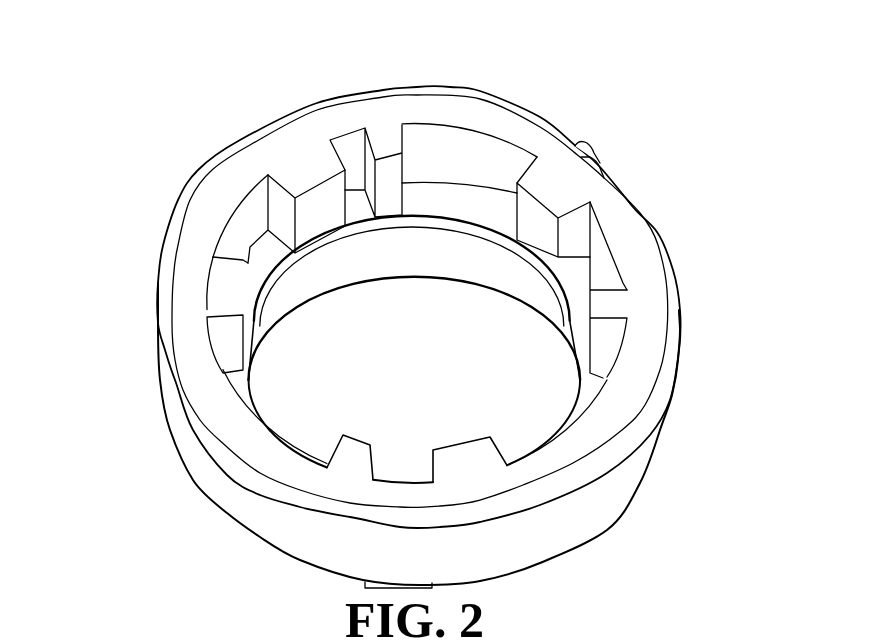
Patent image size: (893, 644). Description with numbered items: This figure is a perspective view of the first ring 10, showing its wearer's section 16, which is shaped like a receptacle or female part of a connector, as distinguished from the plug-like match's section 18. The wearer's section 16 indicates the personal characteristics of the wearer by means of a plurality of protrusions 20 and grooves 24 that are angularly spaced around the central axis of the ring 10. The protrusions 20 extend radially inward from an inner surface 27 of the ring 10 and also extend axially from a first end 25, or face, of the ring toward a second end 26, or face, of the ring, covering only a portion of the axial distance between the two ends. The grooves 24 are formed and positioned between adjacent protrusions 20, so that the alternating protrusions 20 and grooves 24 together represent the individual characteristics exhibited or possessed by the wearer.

The first ring 10 is at (724, 300).
The wearer's section 16 is at (177, 410).
The match's section 18 is at (443, 252).
The protrusions 20 is at (300, 165).
The grooves 24 is at (214, 196).
The first end 25 is at (558, 452).
The second end 26 is at (398, 276).
The inner surface 27 is at (603, 253).